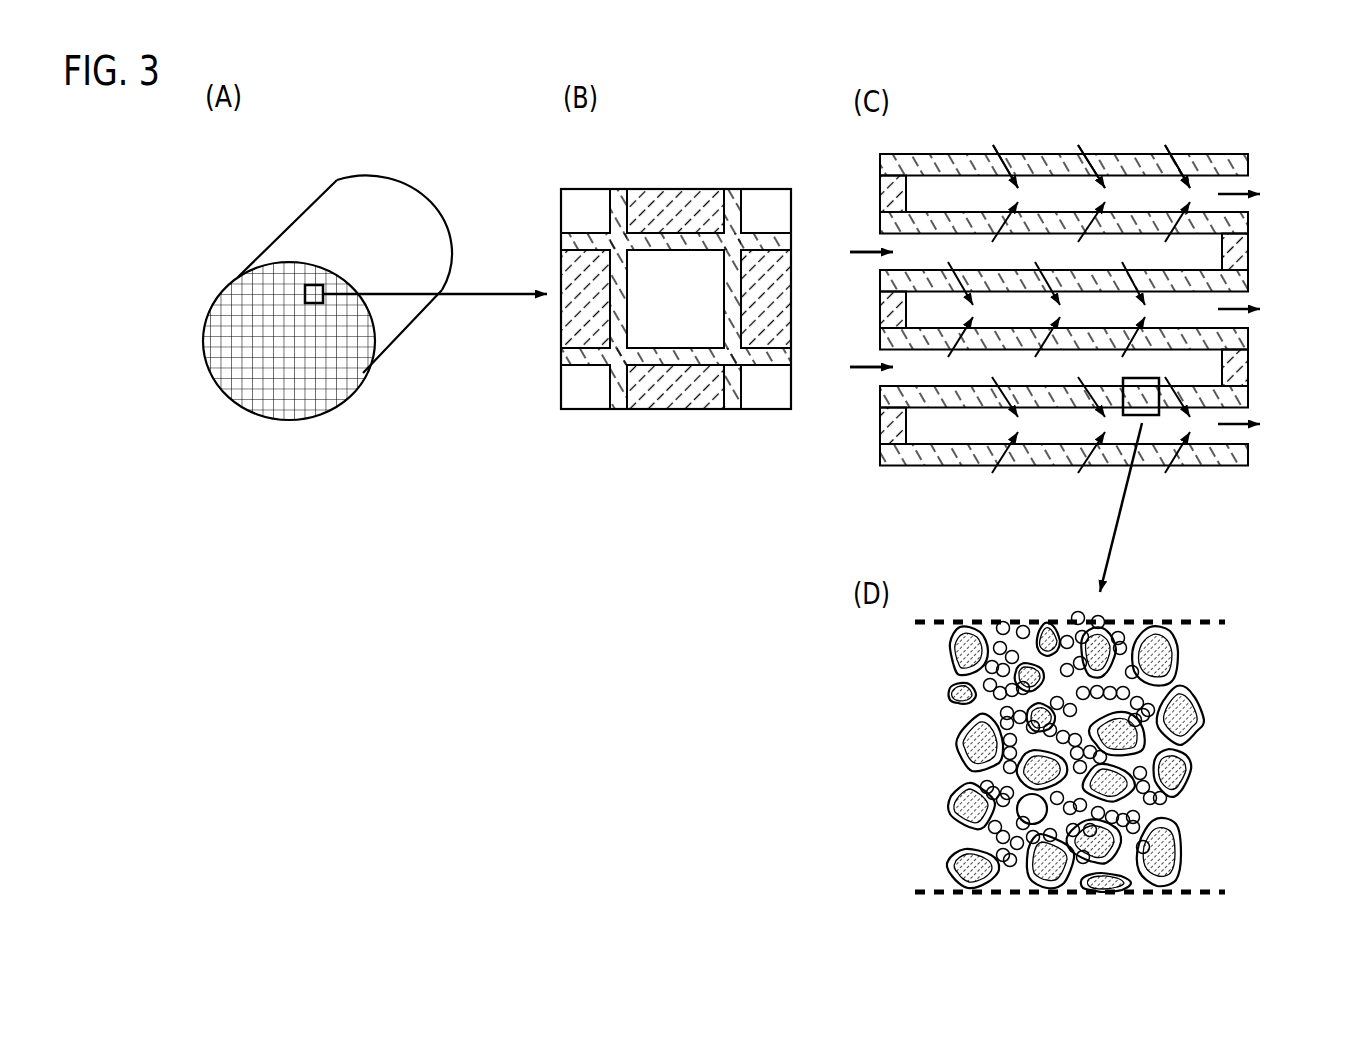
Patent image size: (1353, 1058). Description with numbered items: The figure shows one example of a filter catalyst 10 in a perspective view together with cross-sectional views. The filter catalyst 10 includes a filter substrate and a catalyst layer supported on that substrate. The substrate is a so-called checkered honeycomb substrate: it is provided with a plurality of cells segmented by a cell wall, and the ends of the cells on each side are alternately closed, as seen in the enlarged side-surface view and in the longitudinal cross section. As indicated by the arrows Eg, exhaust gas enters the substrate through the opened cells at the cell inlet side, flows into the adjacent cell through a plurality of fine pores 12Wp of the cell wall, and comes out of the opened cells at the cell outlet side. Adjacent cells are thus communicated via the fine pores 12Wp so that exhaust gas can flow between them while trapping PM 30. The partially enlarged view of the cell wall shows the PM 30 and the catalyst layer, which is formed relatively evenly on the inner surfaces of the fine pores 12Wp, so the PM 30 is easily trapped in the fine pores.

The filter catalyst 10 is at (340, 248).
The fine pores 12Wp is at (947, 693).
The PM 30 is at (968, 843).
The exhaust gas Eg is at (993, 147).